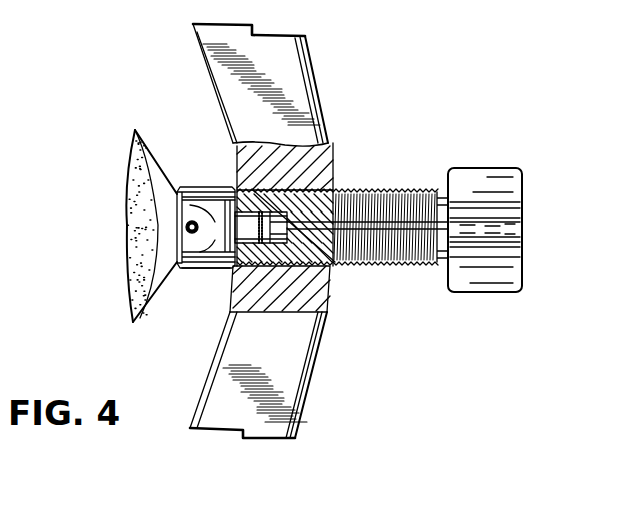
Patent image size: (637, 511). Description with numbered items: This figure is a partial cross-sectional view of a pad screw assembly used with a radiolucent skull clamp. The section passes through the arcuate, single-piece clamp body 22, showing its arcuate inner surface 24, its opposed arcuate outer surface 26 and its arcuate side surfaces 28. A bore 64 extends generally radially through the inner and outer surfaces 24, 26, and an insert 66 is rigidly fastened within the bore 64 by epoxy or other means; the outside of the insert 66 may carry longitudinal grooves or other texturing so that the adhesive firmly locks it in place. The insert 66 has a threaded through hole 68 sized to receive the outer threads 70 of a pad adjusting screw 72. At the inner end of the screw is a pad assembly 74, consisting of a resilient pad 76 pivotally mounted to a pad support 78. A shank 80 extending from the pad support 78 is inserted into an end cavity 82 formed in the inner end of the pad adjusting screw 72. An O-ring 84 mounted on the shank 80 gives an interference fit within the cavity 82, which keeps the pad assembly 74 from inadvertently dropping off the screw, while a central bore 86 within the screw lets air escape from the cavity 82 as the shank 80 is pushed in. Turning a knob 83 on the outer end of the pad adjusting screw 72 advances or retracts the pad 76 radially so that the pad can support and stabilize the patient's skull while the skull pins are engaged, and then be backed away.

The clamp body 22 is at (315, 45).
The inner surface 24 is at (200, 405).
The outer surface 26 is at (318, 78).
The side surfaces 28 is at (276, 360).
The bores 64 is at (327, 317).
The inserts 66 is at (335, 168).
The threaded through hole 68 is at (335, 262).
The outer threads 70 is at (256, 190).
The pad adjusting screw 72 is at (397, 192).
The pad assembly 74 is at (69, 154).
The resilient pad 76 is at (125, 292).
The pad support 78 is at (206, 269).
The shank 80 is at (314, 267).
The end cavity 82 is at (284, 267).
The knob 83 is at (487, 168).
The O-ring 84 is at (258, 190).
The central bore 86 is at (327, 270).